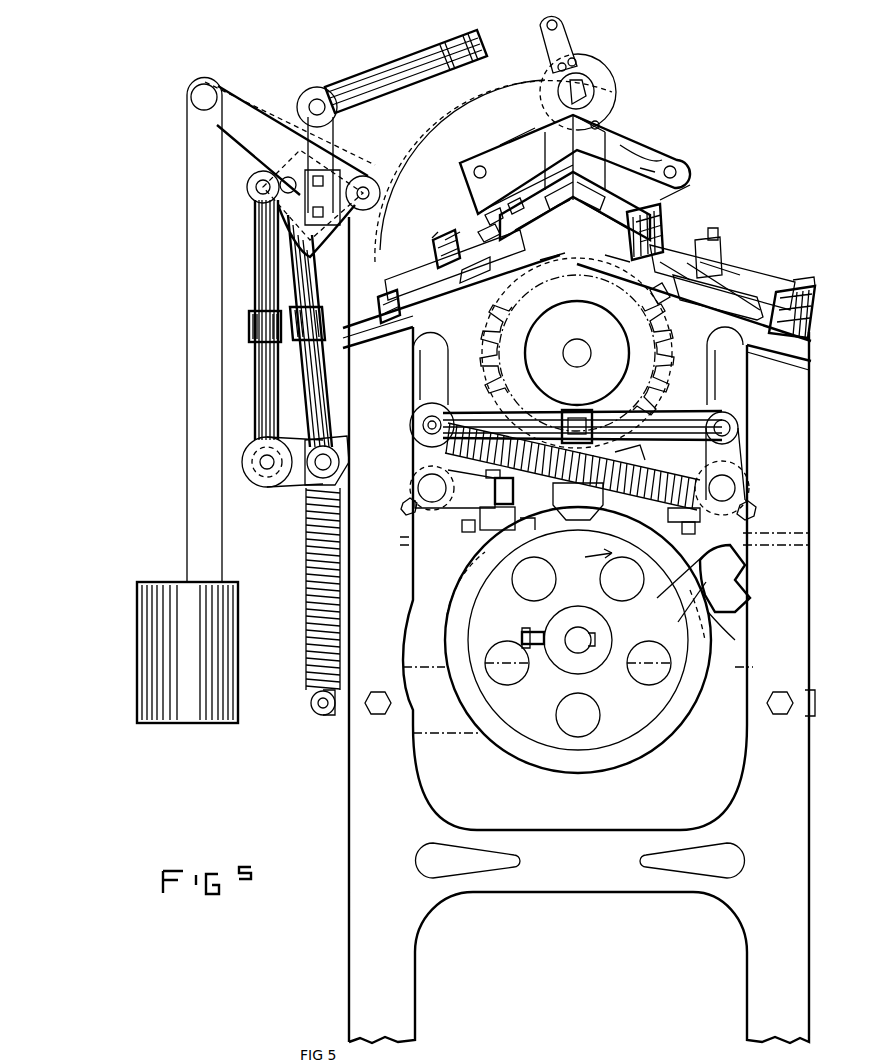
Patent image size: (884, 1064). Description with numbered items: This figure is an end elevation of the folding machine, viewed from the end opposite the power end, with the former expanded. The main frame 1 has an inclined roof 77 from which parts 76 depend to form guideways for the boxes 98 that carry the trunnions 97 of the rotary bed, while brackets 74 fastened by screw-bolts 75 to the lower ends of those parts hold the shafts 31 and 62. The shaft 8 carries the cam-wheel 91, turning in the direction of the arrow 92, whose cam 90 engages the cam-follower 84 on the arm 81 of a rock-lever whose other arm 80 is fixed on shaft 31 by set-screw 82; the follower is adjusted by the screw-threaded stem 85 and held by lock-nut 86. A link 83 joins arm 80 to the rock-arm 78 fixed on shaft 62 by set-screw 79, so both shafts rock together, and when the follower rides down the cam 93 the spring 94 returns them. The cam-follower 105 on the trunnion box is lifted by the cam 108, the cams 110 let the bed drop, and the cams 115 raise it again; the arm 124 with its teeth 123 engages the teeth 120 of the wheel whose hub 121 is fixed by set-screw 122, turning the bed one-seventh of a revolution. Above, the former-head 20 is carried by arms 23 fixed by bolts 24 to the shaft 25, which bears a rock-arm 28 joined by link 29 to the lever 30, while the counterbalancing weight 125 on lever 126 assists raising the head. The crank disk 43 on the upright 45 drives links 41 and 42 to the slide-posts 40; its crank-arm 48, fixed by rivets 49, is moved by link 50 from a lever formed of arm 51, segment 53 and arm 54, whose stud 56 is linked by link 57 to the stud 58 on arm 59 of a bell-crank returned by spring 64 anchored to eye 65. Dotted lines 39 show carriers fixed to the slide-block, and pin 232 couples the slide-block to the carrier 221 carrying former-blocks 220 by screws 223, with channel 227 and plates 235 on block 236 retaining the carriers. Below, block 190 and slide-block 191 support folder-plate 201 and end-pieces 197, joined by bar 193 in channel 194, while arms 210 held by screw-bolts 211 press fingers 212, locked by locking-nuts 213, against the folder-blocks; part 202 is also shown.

The main frame 1 is at (352, 738).
The shaft 8 is at (577, 628).
The former-head 20 is at (528, 172).
The arms 23 is at (493, 171).
The bolts 24 is at (600, 122).
The shaft 25 is at (363, 210).
The rock-arm 28 is at (262, 176).
The link 29 is at (255, 250).
The lever 30 is at (275, 482).
The shaft 31 is at (418, 488).
The dotted lines 39 is at (485, 212).
The slide-posts 40 is at (480, 166).
The link 41 is at (505, 145).
The link 42 is at (630, 145).
The crank disk 43 is at (592, 84).
The upright 45 is at (590, 92).
The crank-arm 48 is at (545, 23).
The rivets 49 is at (556, 65).
The link 50 is at (405, 68).
The arm 51 is at (325, 175).
The segment 53 is at (295, 152).
The arm 54 is at (306, 130).
The stud 56 is at (283, 188).
The link 57 is at (318, 290).
The stud 58 is at (312, 462).
The arm 59 is at (330, 445).
The shaft 62 is at (736, 488).
The spring 64 is at (308, 572).
The eye 65 is at (311, 704).
The brackets 74 is at (435, 512).
The screw-bolts 75 is at (690, 538).
The parts 76 is at (448, 360).
The inclined roof 77 is at (576, 331).
The rock-arm 78 is at (738, 455).
The set-screw 79 is at (752, 512).
The arm 80 is at (415, 440).
The arm 81 is at (513, 490).
The set-screw 82 is at (403, 510).
The link 83 is at (575, 412).
The cam-follower 84 is at (522, 522).
The screw-threaded stem 85 is at (497, 518).
The lock-nut 86 is at (486, 476).
The cam 90 is at (478, 570).
The cam-wheel 91 is at (448, 634).
The arrow 92 is at (589, 561).
The cam 93 is at (718, 618).
The spring 94 is at (680, 485).
The trunnions 97 is at (577, 353).
The boxes 98 is at (639, 454).
The cam-follower 105 is at (578, 501).
The cam 108 is at (452, 608).
The cams 110 is at (704, 621).
The cams 115 is at (672, 577).
The teeth 120 is at (610, 280).
The hub 121 is at (577, 353).
The set-screw 122 is at (656, 303).
The teeth 123 is at (738, 555).
The arm 124 is at (679, 605).
The counterbalancing weight 125 is at (137, 618).
The lever 126 is at (240, 112).
The block 190 is at (405, 312).
The slide-block 191 is at (760, 285).
The bar 193 is at (735, 305).
The channel 194 is at (722, 262).
The end-pieces 197 is at (715, 268).
The plate 201 is at (678, 272).
The slab 202 is at (480, 262).
The arms 210 is at (425, 262).
The screw-bolts 211 is at (797, 280).
The adjustable finger 212 is at (432, 236).
The locking-nuts 213 is at (445, 240).
The former-blocks 220 is at (576, 264).
The carrier 221 is at (478, 228).
The screws 223 is at (508, 204).
The groove or channel 227 is at (650, 165).
The pin 232 is at (688, 185).
The plates 235 is at (565, 200).
The block 236 is at (588, 186).